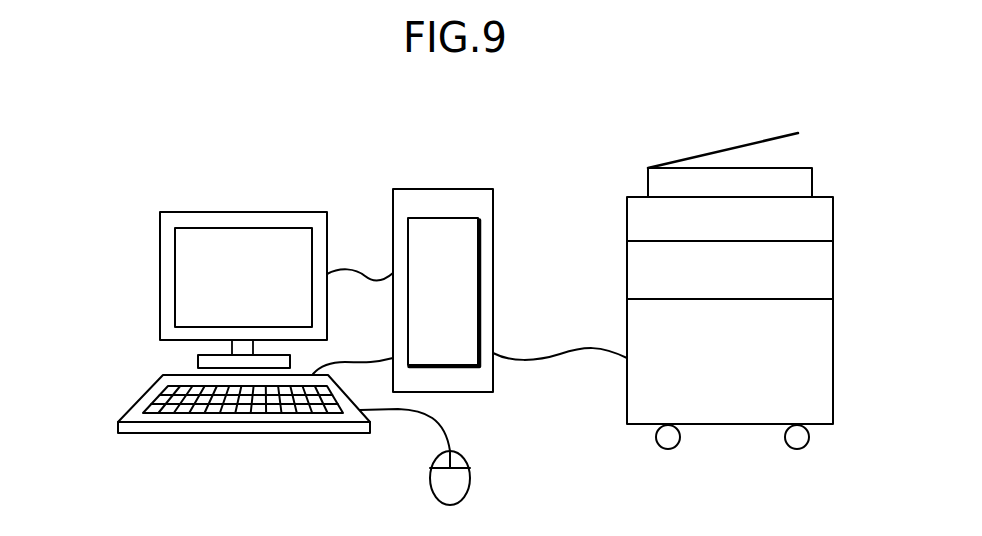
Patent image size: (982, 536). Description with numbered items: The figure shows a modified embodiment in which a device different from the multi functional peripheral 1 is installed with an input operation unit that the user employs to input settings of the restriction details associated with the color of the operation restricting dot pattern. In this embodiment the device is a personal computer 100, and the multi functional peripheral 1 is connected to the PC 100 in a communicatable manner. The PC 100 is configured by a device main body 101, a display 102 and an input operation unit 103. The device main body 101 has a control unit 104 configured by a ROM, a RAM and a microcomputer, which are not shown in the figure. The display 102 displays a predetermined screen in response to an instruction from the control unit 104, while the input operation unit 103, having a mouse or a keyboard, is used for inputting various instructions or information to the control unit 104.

The multi functional peripheral 1 is at (833, 330).
The personal computer 100 is at (142, 352).
The device main body 101 is at (493, 205).
The display 102 is at (255, 218).
The input operation unit 103 is at (307, 433).
The control unit 104 is at (478, 262).